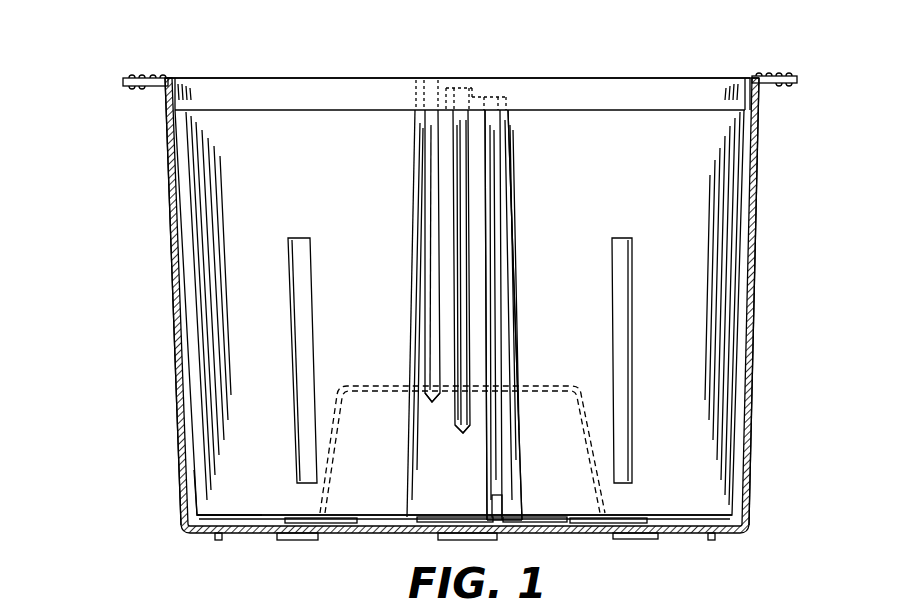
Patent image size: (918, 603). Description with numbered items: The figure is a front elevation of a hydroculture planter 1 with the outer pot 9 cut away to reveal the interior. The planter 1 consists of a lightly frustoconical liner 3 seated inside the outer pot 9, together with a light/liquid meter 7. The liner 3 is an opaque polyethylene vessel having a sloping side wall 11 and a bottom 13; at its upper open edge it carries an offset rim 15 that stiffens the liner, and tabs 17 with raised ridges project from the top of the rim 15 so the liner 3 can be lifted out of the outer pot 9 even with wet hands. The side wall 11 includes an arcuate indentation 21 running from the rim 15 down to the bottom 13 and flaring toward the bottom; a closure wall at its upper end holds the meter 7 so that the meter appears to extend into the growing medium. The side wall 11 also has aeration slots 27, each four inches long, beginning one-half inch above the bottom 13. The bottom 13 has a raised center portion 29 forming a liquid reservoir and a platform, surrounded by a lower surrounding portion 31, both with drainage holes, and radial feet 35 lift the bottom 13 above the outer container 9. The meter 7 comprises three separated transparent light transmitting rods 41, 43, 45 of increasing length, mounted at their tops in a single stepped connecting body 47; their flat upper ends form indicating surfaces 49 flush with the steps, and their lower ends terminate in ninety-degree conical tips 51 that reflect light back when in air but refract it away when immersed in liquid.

The hydroculture planter 1 is at (128, 135).
The liner 3 is at (542, 132).
The light/liquid meter 7 is at (510, 158).
The outer pot 9 is at (173, 313).
The side wall 11 is at (175, 206).
The bottom 13 is at (688, 515).
The offset rim 15 is at (665, 95).
The tabs 17 is at (128, 78).
The arcuate indentation 21 is at (455, 472).
The aeration slots 27 is at (308, 353).
The raised center portion 29 is at (553, 385).
The lower surrounding portion 31 is at (262, 515).
The radial feet 35 is at (260, 530).
The light transmitting rod 41 is at (432, 195).
The light transmitting rod 43 is at (463, 222).
The light transmitting rod 45 is at (493, 237).
The connecting body 47 is at (444, 88).
The indicating surfaces 49 is at (433, 78).
The conical tips 51 is at (430, 395).